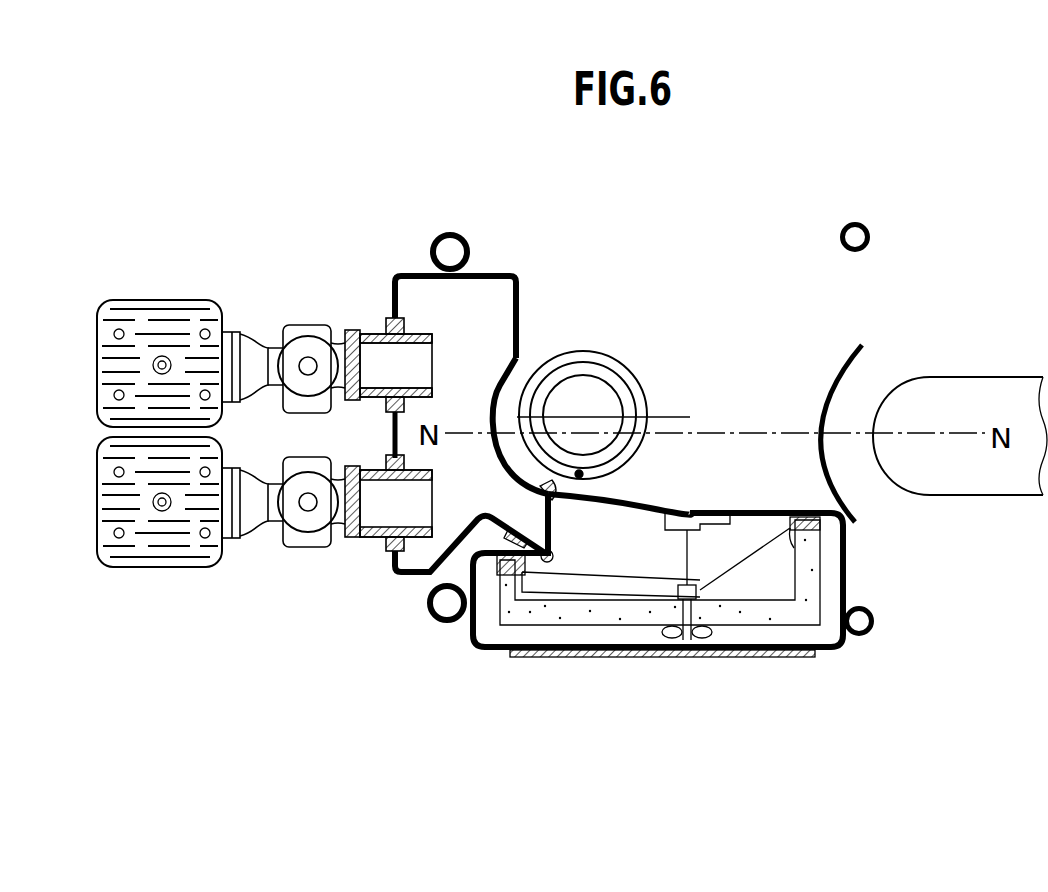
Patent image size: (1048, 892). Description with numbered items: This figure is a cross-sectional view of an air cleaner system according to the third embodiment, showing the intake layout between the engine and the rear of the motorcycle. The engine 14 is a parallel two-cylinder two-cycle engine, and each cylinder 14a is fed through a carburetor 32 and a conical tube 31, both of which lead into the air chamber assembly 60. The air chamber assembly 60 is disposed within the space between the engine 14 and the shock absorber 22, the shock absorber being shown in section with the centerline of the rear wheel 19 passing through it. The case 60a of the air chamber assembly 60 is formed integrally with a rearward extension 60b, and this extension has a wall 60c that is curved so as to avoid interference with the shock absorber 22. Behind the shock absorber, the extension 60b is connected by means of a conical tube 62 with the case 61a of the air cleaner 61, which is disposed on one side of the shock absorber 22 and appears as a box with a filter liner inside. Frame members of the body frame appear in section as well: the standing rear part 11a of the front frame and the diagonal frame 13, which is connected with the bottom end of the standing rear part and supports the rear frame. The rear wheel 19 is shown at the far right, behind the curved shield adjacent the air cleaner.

The engine 14 is at (108, 548).
The cylinder 14a is at (150, 302).
The carburetor 32 is at (306, 330).
The conical tube 31 is at (370, 335).
The air chamber assembly 60 is at (406, 576).
The case of the air chamber assembly 60a is at (521, 279).
The rearward extension 60b is at (513, 470).
The curved wall 60c is at (500, 390).
The standing rear part of the front frame 11a is at (446, 233).
The diagonal frame 13 is at (860, 223).
The shock absorber 22 is at (622, 373).
The conical tube 62 is at (640, 505).
The air cleaner 61 is at (738, 658).
The case of the air cleaner 61a is at (780, 512).
The rear wheel 19 is at (1000, 495).